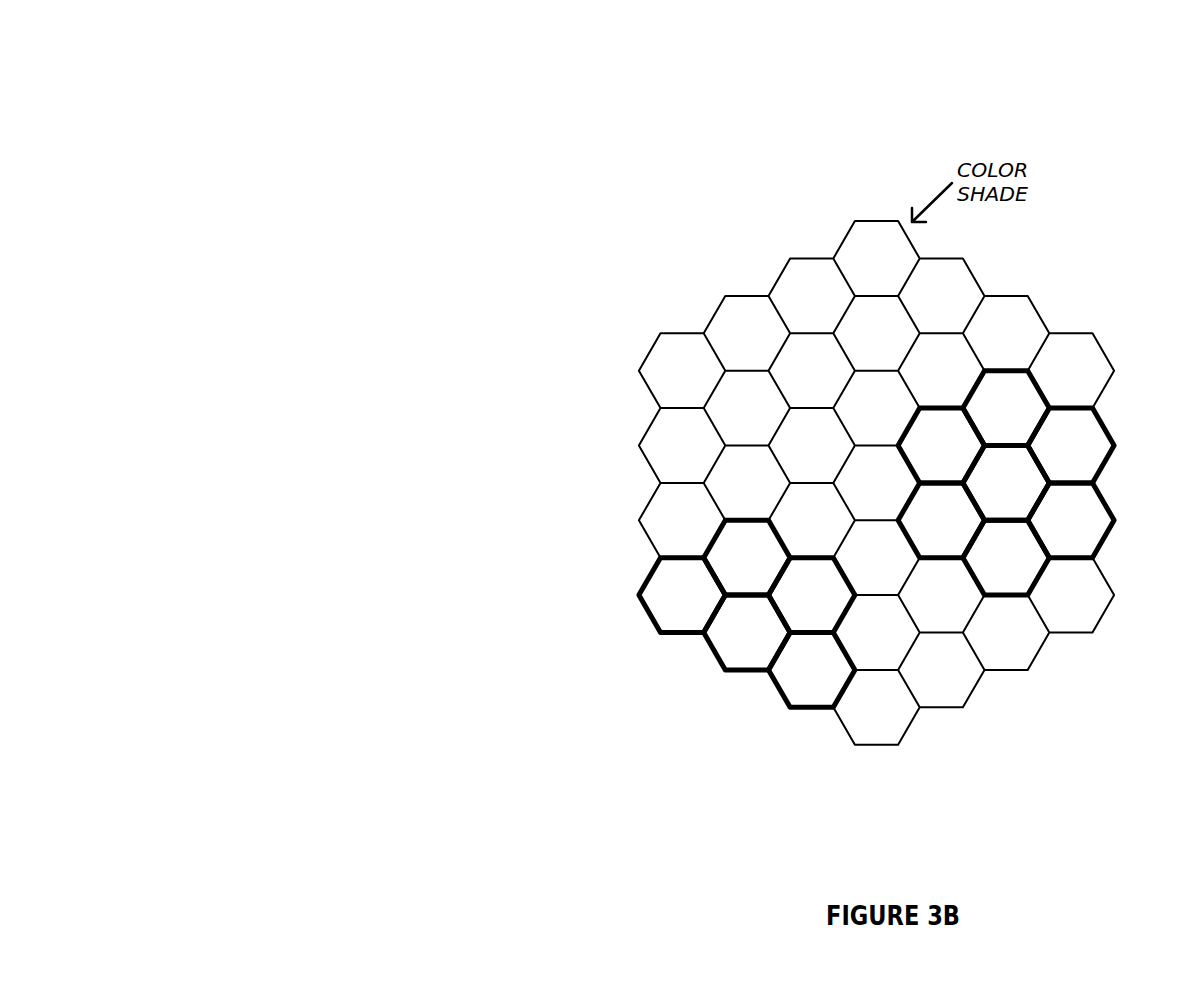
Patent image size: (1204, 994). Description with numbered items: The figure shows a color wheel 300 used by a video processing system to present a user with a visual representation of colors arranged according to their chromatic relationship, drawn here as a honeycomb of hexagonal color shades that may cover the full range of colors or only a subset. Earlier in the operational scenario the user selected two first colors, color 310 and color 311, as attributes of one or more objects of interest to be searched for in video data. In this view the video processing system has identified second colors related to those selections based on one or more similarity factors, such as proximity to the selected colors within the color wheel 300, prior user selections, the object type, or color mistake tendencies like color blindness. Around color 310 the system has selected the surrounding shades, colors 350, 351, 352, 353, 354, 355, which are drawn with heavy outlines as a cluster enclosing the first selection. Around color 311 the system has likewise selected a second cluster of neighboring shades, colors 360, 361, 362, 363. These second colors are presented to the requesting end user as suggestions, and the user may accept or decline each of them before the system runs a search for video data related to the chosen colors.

The color wheel 300 is at (457, 63).
The color 310 is at (989, 494).
The color 311 is at (764, 644).
The color 350 is at (989, 419).
The color 351 is at (1088, 456).
The color 352 is at (1088, 531).
The color 353 is at (989, 569).
The color 354 is at (924, 531).
The color 355 is at (924, 456).
The color 360 is at (665, 606).
The color 361 is at (764, 569).
The color 362 is at (829, 606).
The color 363 is at (829, 681).